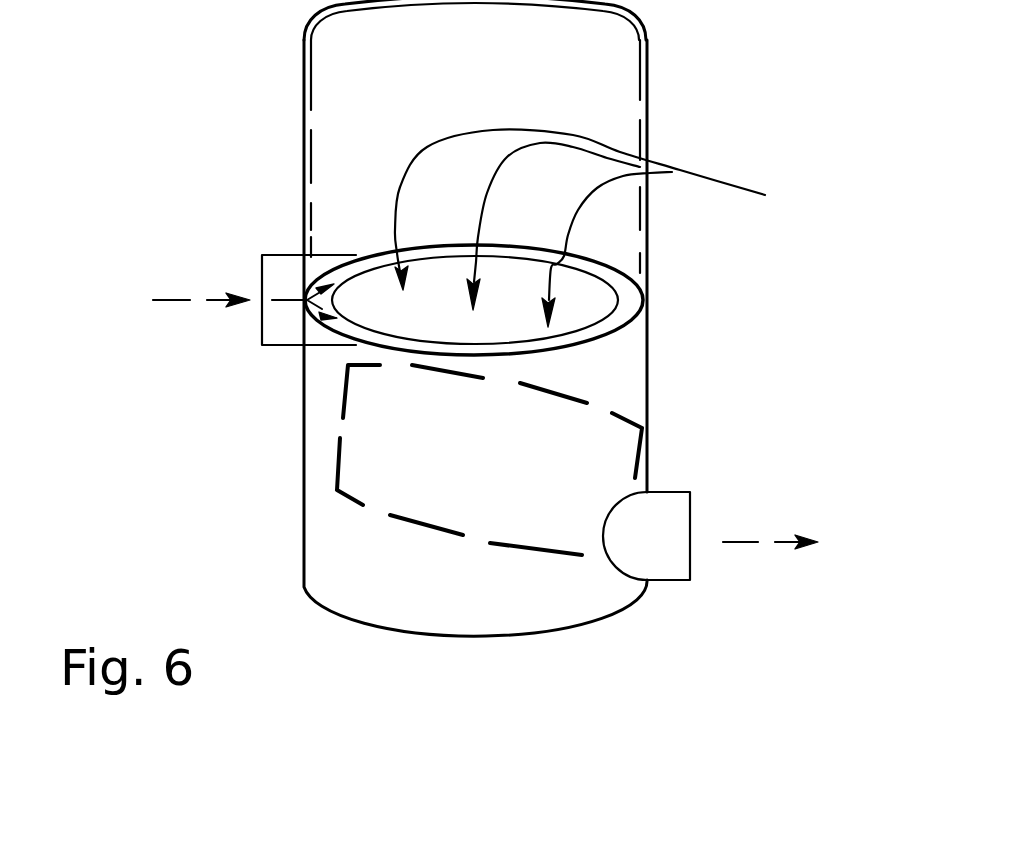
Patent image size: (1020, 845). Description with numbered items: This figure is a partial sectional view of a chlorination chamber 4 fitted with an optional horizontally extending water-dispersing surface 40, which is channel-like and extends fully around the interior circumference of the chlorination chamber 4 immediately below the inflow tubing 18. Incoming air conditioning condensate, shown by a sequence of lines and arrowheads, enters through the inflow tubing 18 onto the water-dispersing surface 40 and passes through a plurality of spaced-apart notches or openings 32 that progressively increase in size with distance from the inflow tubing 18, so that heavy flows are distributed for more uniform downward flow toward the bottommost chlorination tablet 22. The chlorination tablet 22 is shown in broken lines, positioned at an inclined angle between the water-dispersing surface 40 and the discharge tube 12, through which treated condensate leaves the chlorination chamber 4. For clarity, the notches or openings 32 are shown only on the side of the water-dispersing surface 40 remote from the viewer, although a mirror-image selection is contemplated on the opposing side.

The chlorination chamber 4 is at (647, 58).
The discharge tube 12 is at (647, 535).
The inflow tubing 18 is at (285, 325).
The chlorination tablet 22 is at (497, 500).
The notches or openings 32 is at (635, 228).
The horizontally extending water-dispersing surface 40 is at (630, 297).